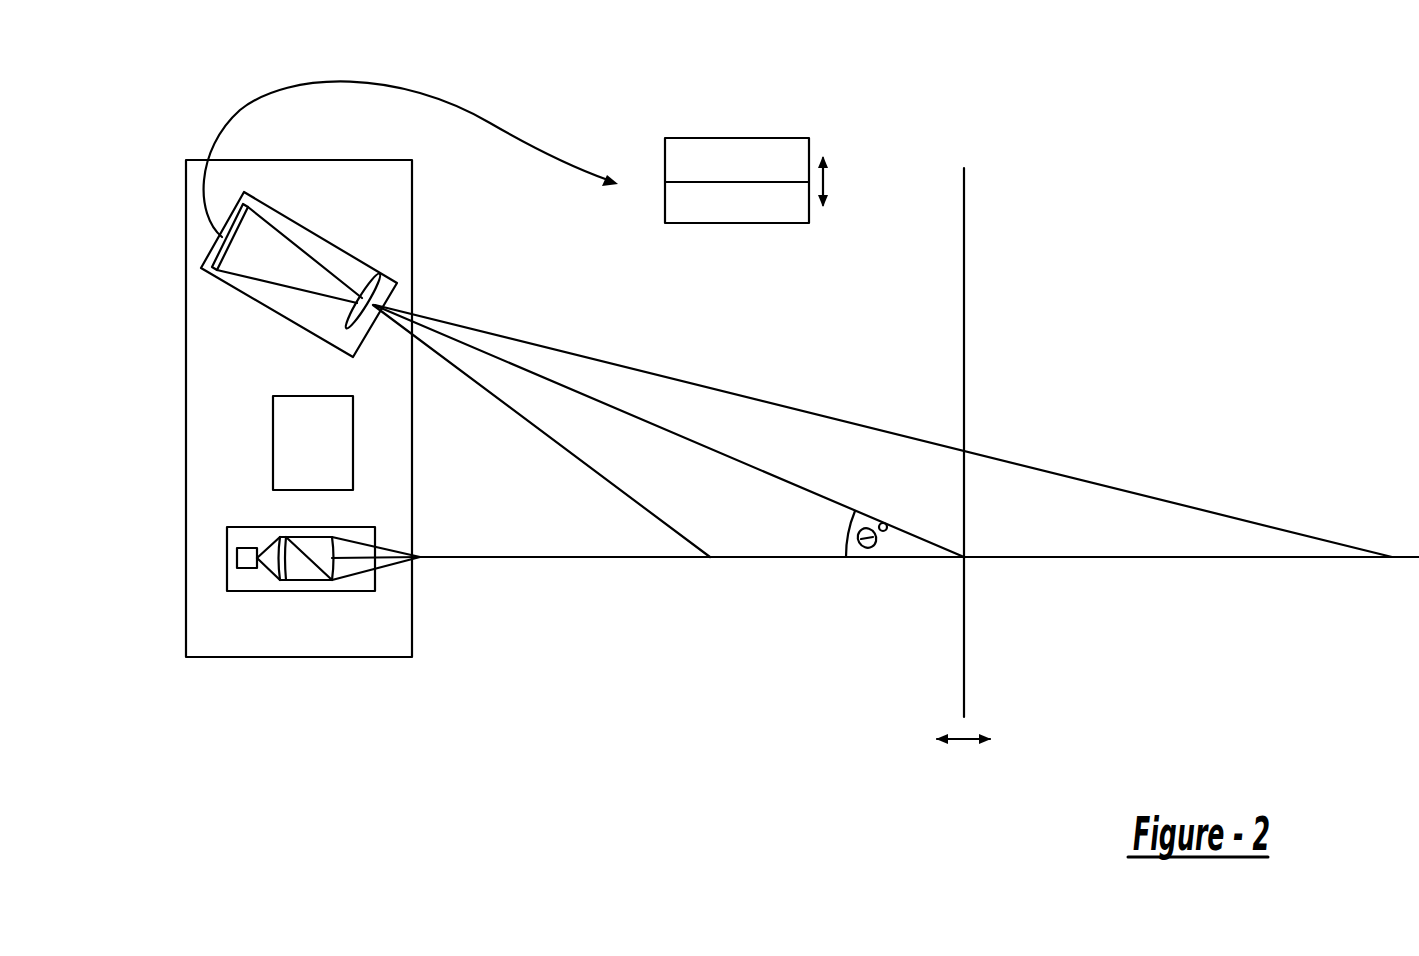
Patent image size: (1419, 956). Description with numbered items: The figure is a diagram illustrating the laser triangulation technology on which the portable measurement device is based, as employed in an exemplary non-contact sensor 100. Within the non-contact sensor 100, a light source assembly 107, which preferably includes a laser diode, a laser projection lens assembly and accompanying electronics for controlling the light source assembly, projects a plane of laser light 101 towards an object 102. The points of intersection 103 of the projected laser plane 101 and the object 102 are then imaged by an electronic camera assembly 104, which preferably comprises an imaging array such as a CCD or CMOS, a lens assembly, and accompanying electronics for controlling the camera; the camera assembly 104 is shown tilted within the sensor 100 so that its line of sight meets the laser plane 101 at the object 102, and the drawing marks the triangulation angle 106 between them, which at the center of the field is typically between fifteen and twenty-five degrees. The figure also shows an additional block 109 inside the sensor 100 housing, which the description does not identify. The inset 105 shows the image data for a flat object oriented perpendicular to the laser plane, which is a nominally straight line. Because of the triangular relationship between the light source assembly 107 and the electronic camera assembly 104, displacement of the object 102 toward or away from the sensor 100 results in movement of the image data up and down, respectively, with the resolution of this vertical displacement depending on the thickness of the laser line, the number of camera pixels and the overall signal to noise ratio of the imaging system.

The non-contact sensor 100 is at (259, 665).
The plane of laser light 101 is at (604, 561).
The object 102 is at (961, 657).
The points of intersection of the projected laser plane and the object 103 is at (957, 568).
The electronic camera assembly 104 is at (249, 305).
The inset 105 is at (748, 232).
The angle between camera line of sight and light beam 106 is at (834, 532).
The light source assembly 107 is at (340, 600).
The processor 109 is at (364, 461).